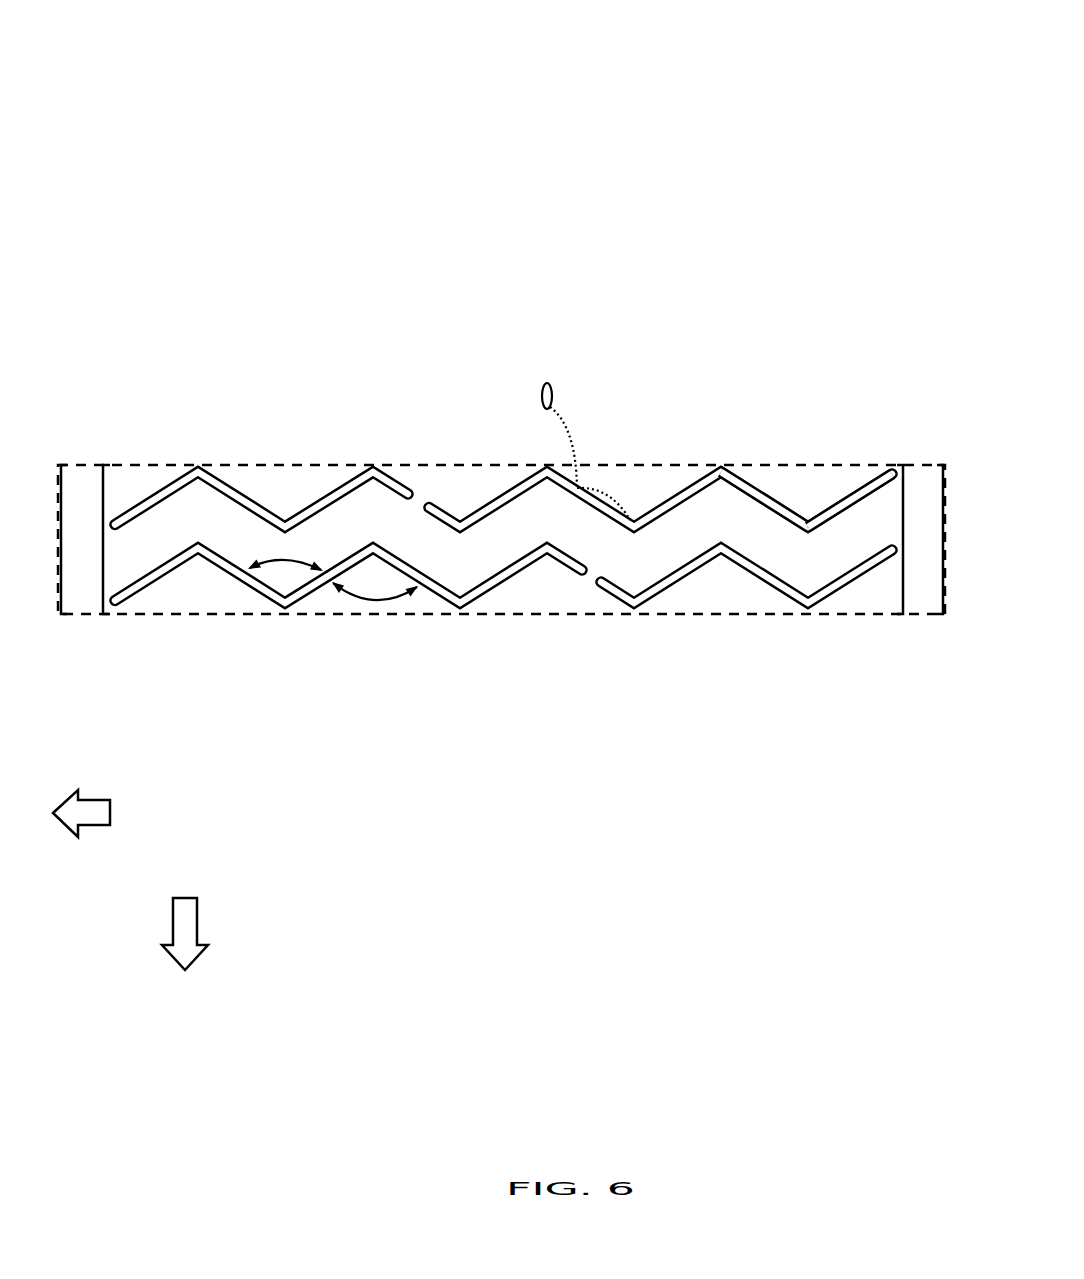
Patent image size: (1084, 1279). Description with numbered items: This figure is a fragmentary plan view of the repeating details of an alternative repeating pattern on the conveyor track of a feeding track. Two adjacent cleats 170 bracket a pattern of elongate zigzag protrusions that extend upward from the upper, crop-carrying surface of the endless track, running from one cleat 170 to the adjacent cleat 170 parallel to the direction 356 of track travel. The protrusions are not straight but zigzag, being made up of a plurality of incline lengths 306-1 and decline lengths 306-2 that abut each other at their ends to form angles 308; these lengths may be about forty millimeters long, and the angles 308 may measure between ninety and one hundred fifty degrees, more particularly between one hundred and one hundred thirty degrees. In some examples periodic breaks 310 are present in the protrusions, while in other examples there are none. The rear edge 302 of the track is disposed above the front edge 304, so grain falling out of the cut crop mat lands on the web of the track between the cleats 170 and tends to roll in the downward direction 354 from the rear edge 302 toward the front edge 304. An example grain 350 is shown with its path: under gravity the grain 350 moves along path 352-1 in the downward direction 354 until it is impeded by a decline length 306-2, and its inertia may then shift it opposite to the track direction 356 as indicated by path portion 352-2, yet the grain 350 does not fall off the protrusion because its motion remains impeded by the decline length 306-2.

The rear edge 302 is at (622, 72).
The front edge 304 is at (195, 614).
The cleat 170 is at (92, 470).
The incline length 306-1 is at (843, 496).
The decline length 306-2 is at (758, 493).
The angle 308 is at (282, 561).
The periodic break 310 is at (421, 492).
The grain 350 is at (550, 382).
The grain path 352-1 is at (576, 443).
The path portion 352-2 is at (612, 493).
The downward direction 354 is at (188, 920).
The direction of travel 356 is at (102, 812).